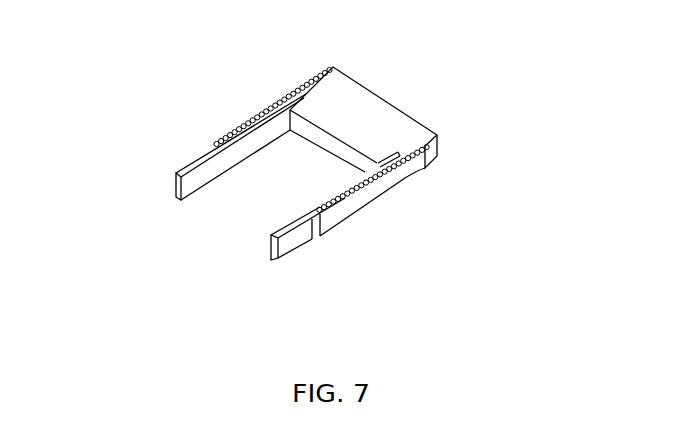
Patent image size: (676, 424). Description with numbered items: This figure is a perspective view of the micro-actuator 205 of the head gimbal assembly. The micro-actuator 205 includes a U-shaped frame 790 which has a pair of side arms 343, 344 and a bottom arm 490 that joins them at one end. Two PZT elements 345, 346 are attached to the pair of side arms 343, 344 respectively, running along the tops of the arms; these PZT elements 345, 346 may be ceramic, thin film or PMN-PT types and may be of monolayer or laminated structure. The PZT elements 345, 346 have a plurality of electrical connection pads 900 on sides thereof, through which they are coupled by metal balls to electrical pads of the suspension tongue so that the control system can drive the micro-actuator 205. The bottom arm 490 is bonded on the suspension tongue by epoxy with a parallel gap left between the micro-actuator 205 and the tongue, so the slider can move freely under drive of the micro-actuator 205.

The micro-actuator 205 is at (82, 114).
The U-shaped frame 790 is at (360, 72).
The bottom arm 490 is at (390, 122).
The electrical connection pads 900 is at (438, 154).
The side arm 343 is at (178, 199).
The side arm 344 is at (274, 263).
The PZT element 345 is at (358, 205).
The PZT element 346 is at (242, 120).